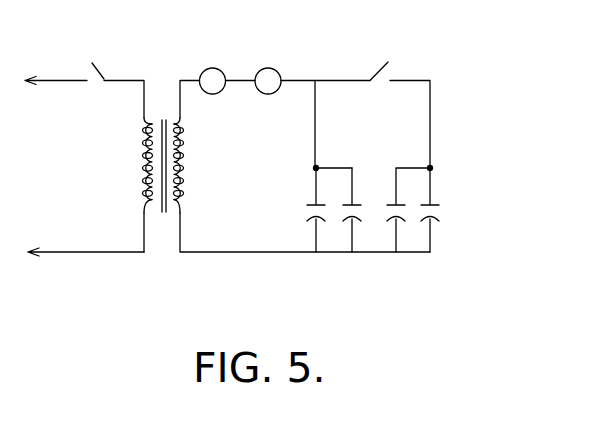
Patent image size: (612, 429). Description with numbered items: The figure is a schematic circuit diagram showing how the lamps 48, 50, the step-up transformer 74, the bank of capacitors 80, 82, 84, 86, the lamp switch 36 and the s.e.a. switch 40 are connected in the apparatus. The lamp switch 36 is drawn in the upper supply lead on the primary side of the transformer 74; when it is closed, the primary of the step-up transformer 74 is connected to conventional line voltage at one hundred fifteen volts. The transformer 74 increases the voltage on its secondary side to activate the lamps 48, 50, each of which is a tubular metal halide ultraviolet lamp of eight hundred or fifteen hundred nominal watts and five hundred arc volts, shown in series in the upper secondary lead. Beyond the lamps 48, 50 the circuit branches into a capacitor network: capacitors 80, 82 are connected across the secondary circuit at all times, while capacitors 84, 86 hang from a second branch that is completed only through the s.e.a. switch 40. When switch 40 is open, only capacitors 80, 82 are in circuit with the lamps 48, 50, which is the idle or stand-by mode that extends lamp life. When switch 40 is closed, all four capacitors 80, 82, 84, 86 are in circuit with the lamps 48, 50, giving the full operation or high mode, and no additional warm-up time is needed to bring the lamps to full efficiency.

The lamp switch 36 is at (105, 76).
The s.e.a. switch 40 is at (378, 71).
The lamp 48 is at (210, 68).
The lamp 50 is at (270, 68).
The step-up transformer 74 is at (167, 236).
The capacitor 80 is at (314, 222).
The capacitor 82 is at (350, 222).
The capacitor 84 is at (395, 222).
The capacitor 86 is at (430, 222).